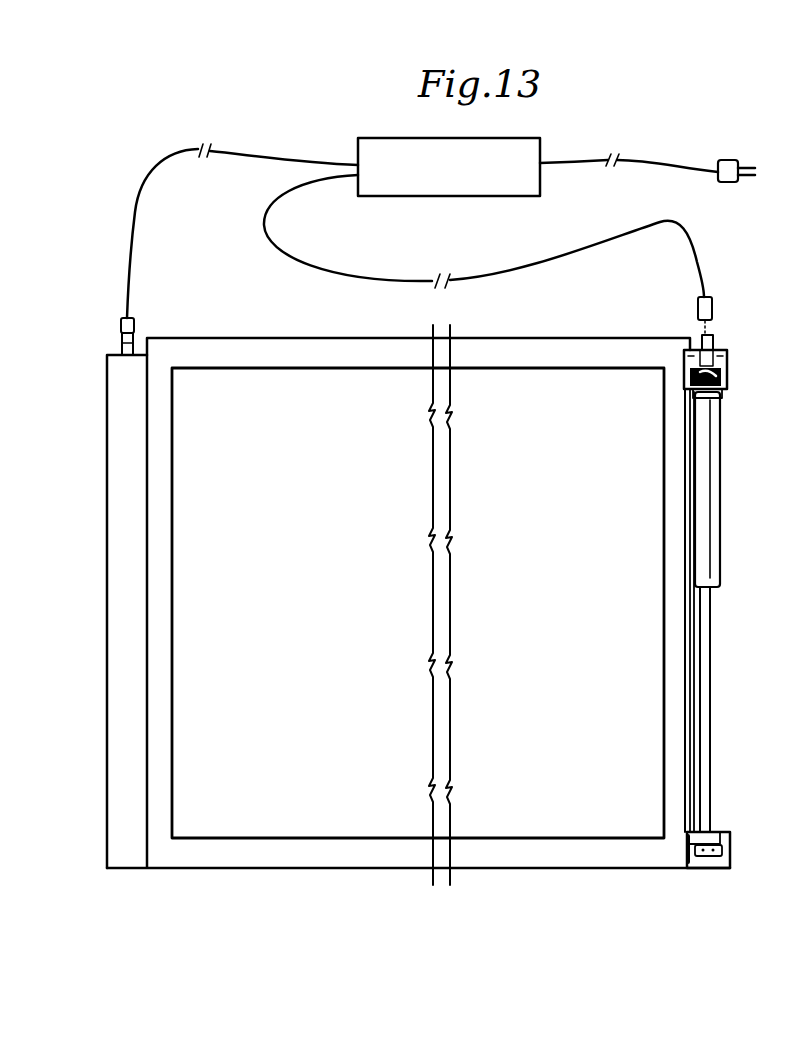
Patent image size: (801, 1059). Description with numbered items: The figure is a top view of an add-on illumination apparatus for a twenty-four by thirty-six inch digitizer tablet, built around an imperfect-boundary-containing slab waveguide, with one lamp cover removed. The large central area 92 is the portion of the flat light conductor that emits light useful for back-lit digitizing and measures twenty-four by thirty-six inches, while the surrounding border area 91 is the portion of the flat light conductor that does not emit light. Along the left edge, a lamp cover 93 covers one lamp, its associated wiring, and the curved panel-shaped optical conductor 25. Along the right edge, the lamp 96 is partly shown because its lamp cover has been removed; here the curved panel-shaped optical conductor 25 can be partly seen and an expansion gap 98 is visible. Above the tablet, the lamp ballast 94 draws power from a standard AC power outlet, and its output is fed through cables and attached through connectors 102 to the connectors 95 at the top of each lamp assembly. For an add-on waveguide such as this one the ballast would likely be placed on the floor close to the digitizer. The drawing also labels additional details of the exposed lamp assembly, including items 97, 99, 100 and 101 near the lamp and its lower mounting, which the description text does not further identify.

The curved panel-shaped optical conductor 25 is at (712, 626).
The non-emitting area of the flat light conductor 91 is at (287, 857).
The light-emitting area of the flat light conductor 92 is at (228, 822).
The lamp cover 93 is at (108, 493).
The lamp ballast 94 is at (376, 145).
The connector 95 is at (119, 346).
The lamp 96 is at (717, 418).
The lower bracket 97 is at (712, 832).
The expansion gap 98 is at (707, 697).
The wire 99 is at (696, 745).
The conductor 100 is at (685, 796).
The bottom mounting block 101 is at (731, 850).
The connector 102 is at (137, 327).